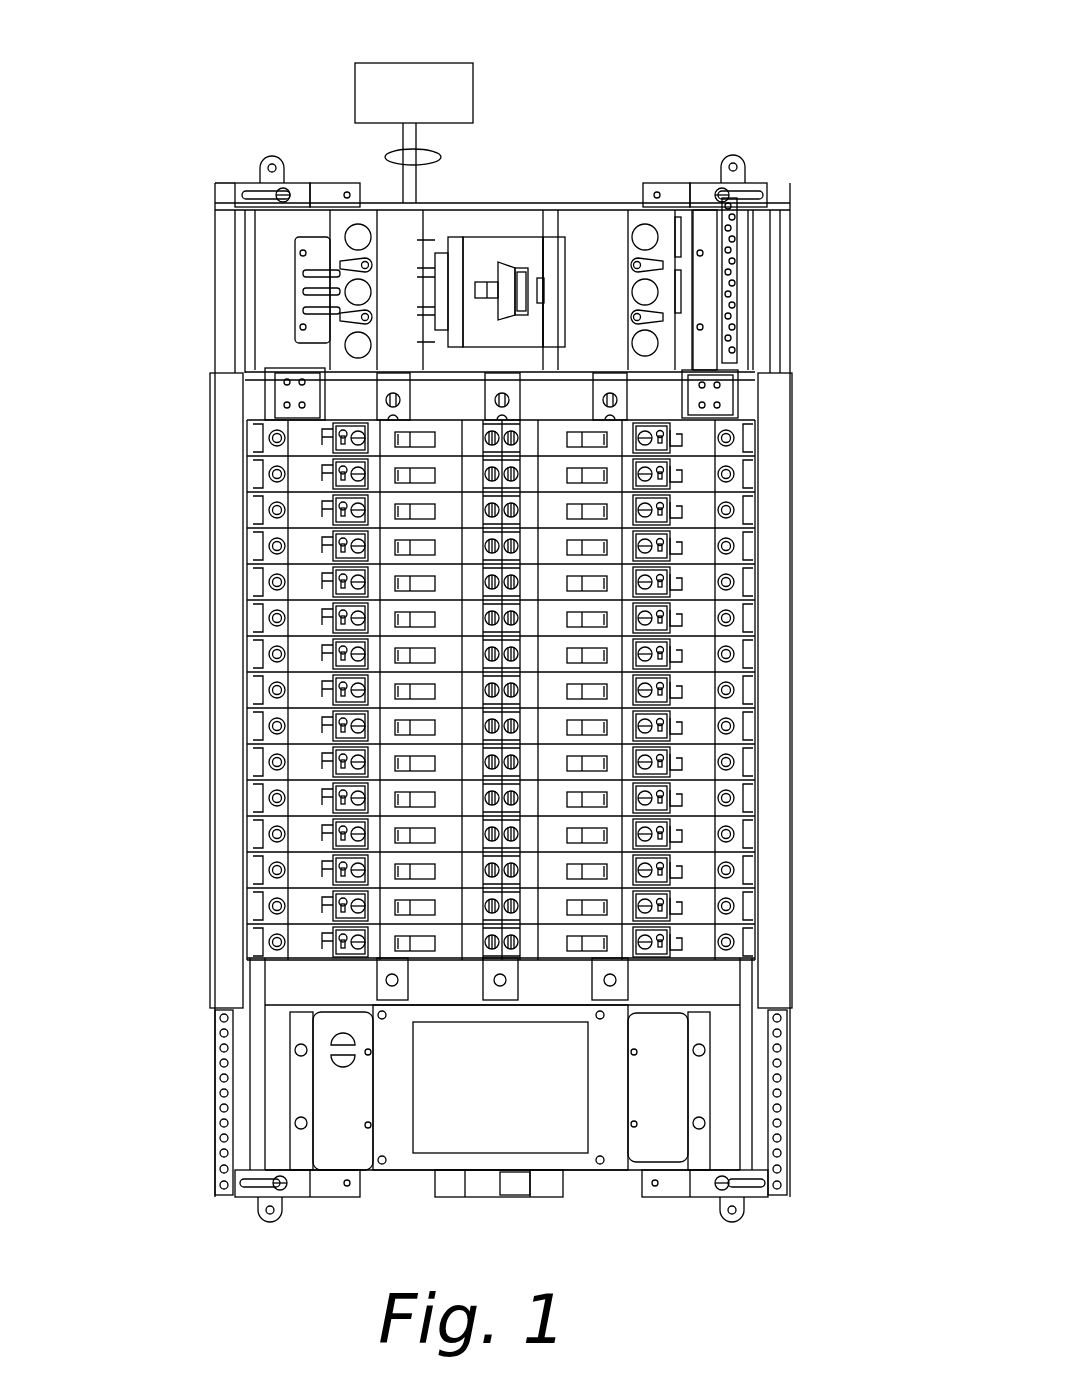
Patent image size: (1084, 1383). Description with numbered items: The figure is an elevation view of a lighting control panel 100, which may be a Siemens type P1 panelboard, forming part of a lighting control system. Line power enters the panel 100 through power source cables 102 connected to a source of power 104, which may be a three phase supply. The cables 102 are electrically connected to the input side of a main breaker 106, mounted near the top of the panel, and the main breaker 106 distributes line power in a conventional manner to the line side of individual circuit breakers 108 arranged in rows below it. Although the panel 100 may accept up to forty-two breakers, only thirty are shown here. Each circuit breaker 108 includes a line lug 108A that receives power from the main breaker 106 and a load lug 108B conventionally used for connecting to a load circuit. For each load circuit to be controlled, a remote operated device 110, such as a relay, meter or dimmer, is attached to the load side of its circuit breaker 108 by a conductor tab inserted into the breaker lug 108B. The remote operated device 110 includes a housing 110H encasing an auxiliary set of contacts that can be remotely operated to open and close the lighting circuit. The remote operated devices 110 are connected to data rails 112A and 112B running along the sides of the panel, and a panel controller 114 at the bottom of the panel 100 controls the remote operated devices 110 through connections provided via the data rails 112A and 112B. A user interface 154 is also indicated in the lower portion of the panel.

The lighting control panel 100 is at (660, 112).
The power source cables 102 is at (441, 157).
The source of power 104 is at (473, 83).
The main breaker 106 is at (507, 250).
The individual circuit breaker 108 is at (605, 428).
The line lug 108A is at (520, 448).
The load lug 108B is at (642, 425).
The remote operated device 110 is at (697, 440).
The housing 110H is at (690, 447).
The data rail 112A is at (772, 870).
The data rail 112B is at (220, 892).
The panel controller 114 is at (580, 1162).
The user interface 154 is at (438, 1132).